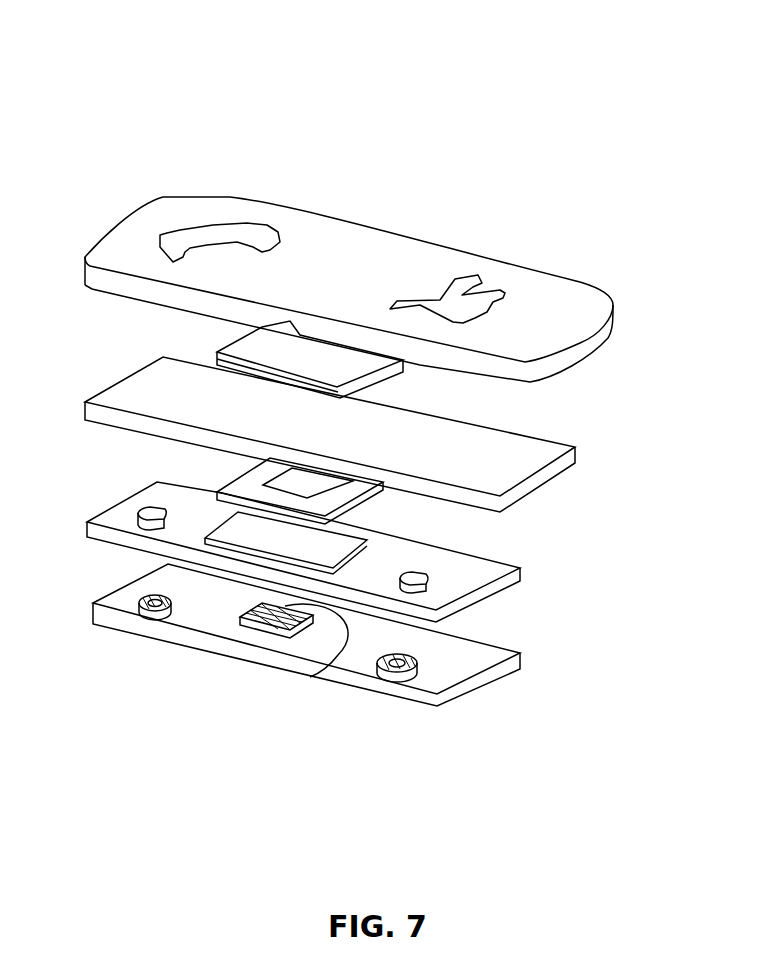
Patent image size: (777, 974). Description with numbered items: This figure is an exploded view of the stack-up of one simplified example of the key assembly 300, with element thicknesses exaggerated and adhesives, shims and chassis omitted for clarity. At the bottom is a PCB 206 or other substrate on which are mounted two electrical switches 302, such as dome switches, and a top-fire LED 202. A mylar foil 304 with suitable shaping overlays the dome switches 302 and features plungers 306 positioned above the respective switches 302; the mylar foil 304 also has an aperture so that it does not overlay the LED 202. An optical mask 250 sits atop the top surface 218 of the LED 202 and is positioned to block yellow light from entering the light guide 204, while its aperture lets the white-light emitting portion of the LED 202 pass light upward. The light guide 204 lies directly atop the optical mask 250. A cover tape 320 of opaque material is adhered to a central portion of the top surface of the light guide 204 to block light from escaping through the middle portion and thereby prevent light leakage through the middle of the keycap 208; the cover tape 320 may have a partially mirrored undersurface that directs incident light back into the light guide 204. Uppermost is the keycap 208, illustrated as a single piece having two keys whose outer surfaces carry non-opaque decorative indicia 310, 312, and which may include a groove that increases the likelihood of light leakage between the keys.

The key assembly 300 is at (622, 116).
The keycap 208 is at (389, 259).
The non-opaque decorative indicia 310 is at (230, 232).
The non-opaque decorative indicia 312 is at (493, 293).
The cover tape 320 is at (360, 362).
The light guide 204 is at (547, 447).
The optical mask 250 is at (352, 497).
The mylar foil 304 is at (315, 544).
The plungers 306 is at (147, 507).
The PCB 206 is at (338, 666).
The electrical switches 302 is at (141, 618).
The top-fire LED 202 is at (262, 628).
The top surface 218 is at (307, 674).